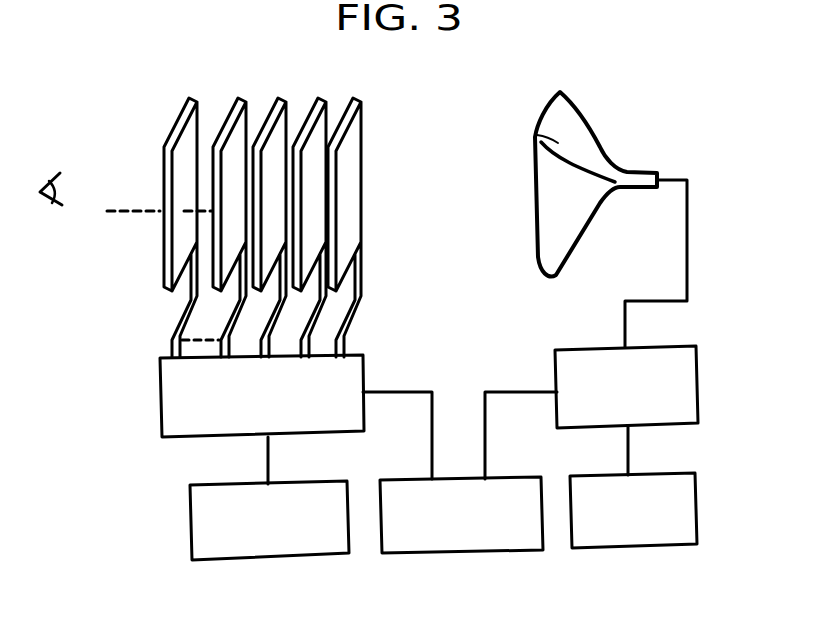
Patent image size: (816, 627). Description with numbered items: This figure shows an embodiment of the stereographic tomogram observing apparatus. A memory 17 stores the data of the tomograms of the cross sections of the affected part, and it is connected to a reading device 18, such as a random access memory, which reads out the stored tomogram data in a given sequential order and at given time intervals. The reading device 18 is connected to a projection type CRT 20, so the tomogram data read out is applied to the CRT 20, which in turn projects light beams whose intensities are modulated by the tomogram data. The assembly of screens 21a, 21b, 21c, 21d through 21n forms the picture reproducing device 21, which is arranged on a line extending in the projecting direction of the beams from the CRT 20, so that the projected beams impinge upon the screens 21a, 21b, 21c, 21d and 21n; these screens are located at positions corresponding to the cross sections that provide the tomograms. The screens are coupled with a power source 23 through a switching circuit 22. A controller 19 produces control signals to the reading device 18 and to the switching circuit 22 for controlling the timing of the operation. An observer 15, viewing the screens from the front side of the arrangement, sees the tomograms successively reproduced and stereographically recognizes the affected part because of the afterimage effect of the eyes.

The observer 15 is at (45, 197).
The memory 17 is at (698, 518).
The reading device 18 is at (700, 400).
The controller 19 is at (460, 553).
The projection type CRT 20 is at (577, 125).
The picture reproducing device 21 is at (288, 209).
The screen 21a is at (352, 107).
The screen 21b is at (327, 110).
The screen 21c is at (289, 108).
The screen 21d is at (233, 110).
The screen 21n is at (178, 112).
The switching circuit 22 is at (160, 414).
The power source 23 is at (188, 531).